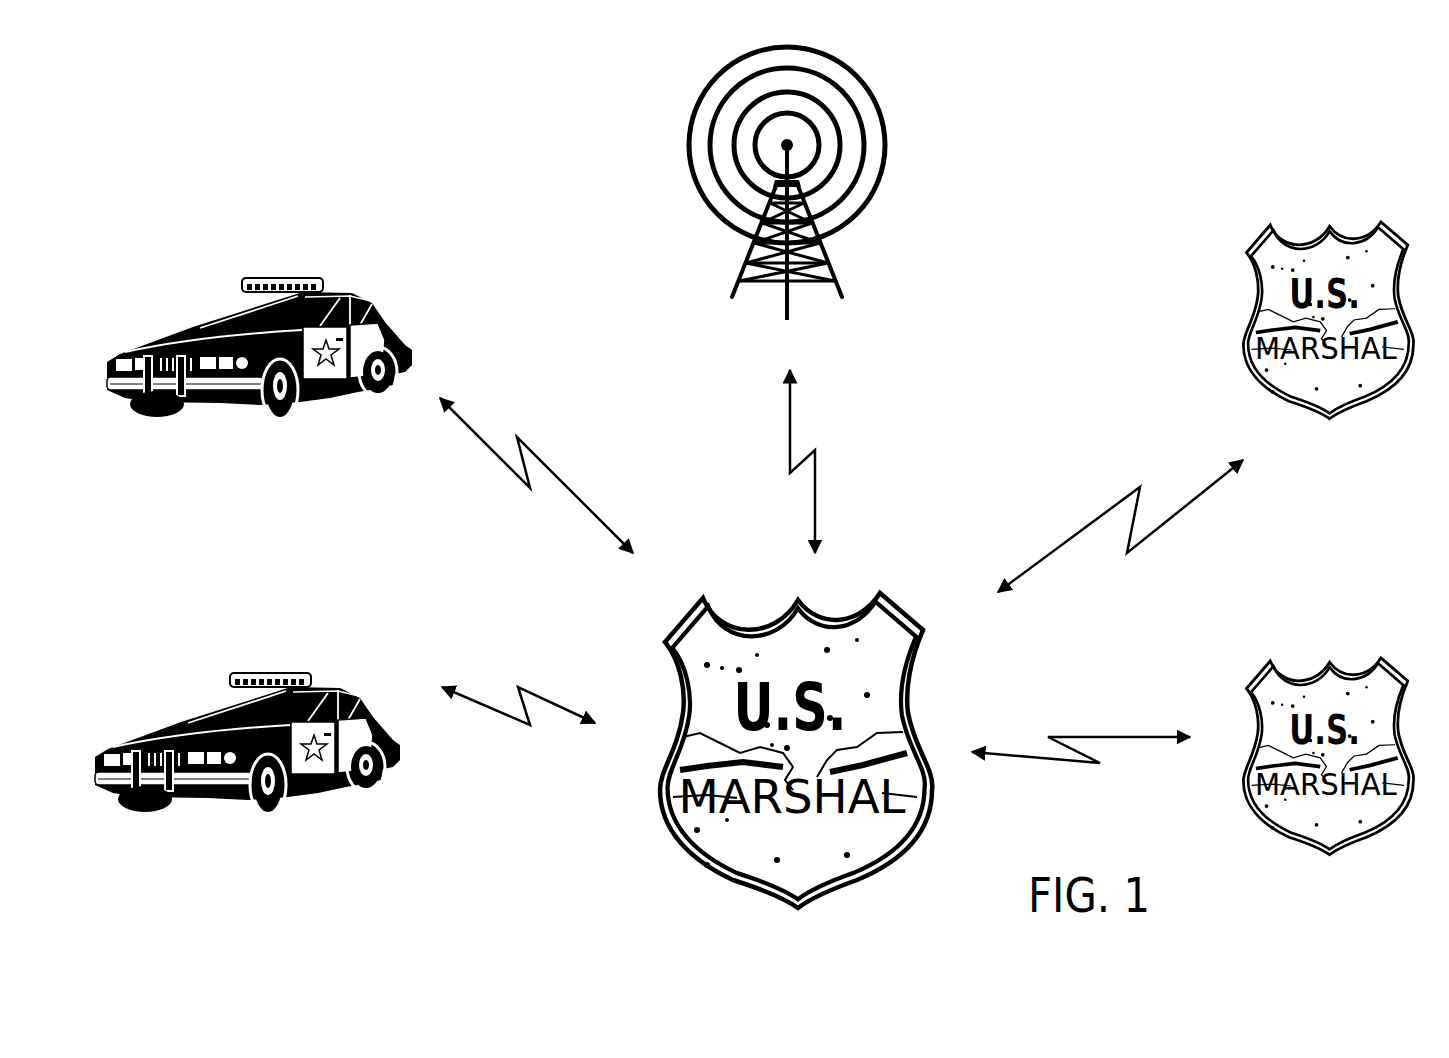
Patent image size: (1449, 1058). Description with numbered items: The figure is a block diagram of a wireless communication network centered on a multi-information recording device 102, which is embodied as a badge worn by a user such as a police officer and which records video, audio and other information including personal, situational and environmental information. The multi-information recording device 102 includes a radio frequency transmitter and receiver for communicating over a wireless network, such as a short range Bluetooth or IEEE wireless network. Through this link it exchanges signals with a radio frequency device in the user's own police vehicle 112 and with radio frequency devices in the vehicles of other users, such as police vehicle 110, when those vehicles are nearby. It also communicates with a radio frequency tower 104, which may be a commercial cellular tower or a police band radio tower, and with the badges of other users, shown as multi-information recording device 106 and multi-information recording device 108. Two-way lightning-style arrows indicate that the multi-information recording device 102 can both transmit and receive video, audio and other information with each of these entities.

The multi-information recording device 102 is at (892, 562).
The radio frequency tower 104 is at (905, 93).
The multi-information recording device 106 is at (1375, 197).
The multi-information recording device 108 is at (1387, 617).
The police vehicle 110 is at (388, 252).
The police vehicle 112 is at (350, 632).